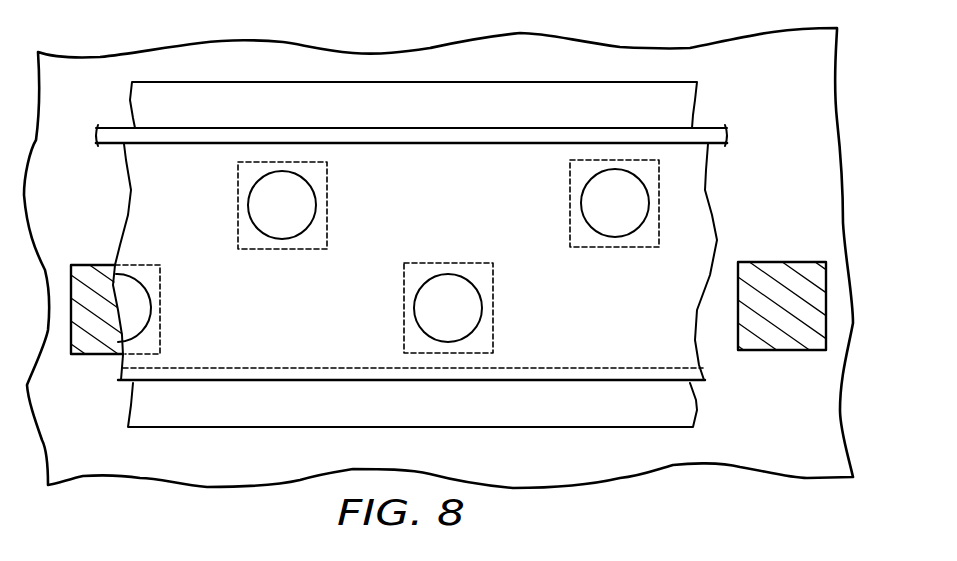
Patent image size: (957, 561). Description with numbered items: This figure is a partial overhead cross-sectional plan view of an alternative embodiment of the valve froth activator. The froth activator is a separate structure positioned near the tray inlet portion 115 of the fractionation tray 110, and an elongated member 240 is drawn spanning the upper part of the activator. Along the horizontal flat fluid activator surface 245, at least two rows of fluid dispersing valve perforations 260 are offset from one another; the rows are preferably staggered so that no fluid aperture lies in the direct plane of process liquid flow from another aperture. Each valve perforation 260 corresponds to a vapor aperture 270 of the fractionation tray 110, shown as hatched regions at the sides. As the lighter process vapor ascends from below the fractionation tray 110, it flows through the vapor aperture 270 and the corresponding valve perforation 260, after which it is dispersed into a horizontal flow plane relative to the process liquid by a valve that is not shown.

The fractionation tray 110 is at (553, 465).
The tray inlet portion 115 is at (607, 64).
The conductive line 240 is at (497, 127).
The horizontal flat fluid activator surface 245 is at (426, 238).
The fluid dispersing valve perforations 260 is at (587, 177).
The vapor aperture 270 is at (774, 267).